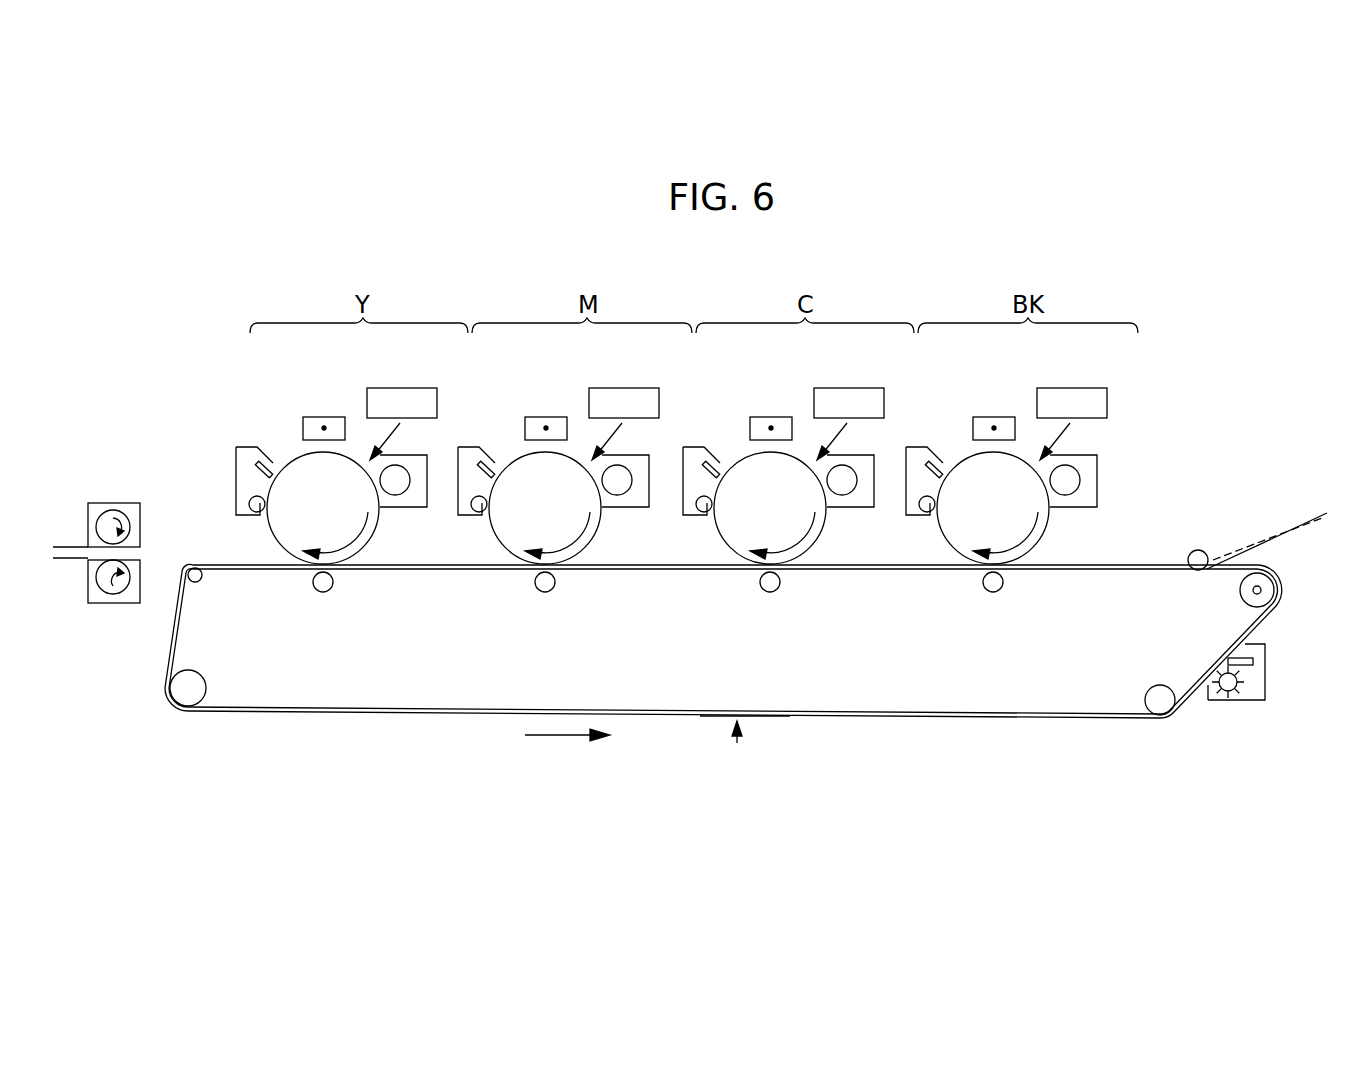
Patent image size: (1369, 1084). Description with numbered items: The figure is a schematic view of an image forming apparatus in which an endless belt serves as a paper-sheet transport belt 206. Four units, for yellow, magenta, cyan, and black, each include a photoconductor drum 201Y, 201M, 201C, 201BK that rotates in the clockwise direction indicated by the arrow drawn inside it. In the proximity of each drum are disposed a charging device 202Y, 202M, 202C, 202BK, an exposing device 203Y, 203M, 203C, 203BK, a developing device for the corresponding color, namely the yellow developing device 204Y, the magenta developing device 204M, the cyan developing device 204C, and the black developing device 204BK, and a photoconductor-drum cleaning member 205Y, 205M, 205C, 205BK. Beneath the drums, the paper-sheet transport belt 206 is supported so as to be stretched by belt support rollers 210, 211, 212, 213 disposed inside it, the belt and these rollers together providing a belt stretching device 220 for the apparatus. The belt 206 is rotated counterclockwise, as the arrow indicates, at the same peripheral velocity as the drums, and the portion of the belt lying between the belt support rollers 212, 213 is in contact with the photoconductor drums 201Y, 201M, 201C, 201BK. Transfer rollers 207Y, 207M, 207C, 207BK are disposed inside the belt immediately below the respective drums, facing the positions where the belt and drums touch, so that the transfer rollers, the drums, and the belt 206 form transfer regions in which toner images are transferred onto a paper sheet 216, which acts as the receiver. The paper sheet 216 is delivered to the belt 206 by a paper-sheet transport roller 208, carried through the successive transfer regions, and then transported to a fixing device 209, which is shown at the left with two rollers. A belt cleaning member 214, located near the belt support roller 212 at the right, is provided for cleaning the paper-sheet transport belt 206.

The photoconductor drum 201Y is at (288, 528).
The photoconductor drum 201M is at (518, 530).
The photoconductor drum 201C is at (742, 532).
The photoconductor drum 201BK is at (965, 533).
The charging device 202Y is at (310, 417).
The charging device 202M is at (557, 417).
The charging device 202C is at (777, 417).
The charging device 202BK is at (1005, 417).
The exposing device 203Y is at (391, 388).
The exposing device 203M is at (612, 388).
The exposing device 203C is at (840, 388).
The exposing device 203BK is at (1082, 377).
The yellow developing device 204Y is at (410, 508).
The magenta developing device 204M is at (632, 508).
The cyan developing device 204C is at (853, 508).
The black developing device 204BK is at (1080, 508).
The photoconductor-drum cleaning member 205Y is at (245, 447).
The photoconductor-drum cleaning member 205M is at (478, 447).
The photoconductor-drum cleaning member 205C is at (703, 447).
The photoconductor-drum cleaning member 205BK is at (925, 448).
The transfer roller 207Y is at (332, 581).
The transfer roller 207M is at (554, 581).
The transfer roller 207C is at (779, 581).
The transfer roller 207BK is at (1002, 581).
The paper-sheet transport belt 206 is at (418, 714).
The paper-sheet transport roller 208 is at (1198, 550).
The fixing device 209 is at (125, 503).
The belt support roller 210 is at (187, 700).
The belt support roller 211 is at (1160, 707).
The belt support roller 212 is at (1274, 588).
The belt support roller 213 is at (195, 568).
The belt cleaning member 214 is at (1253, 700).
The paper sheet 216 is at (1305, 520).
The belt stretching device 220 is at (737, 745).